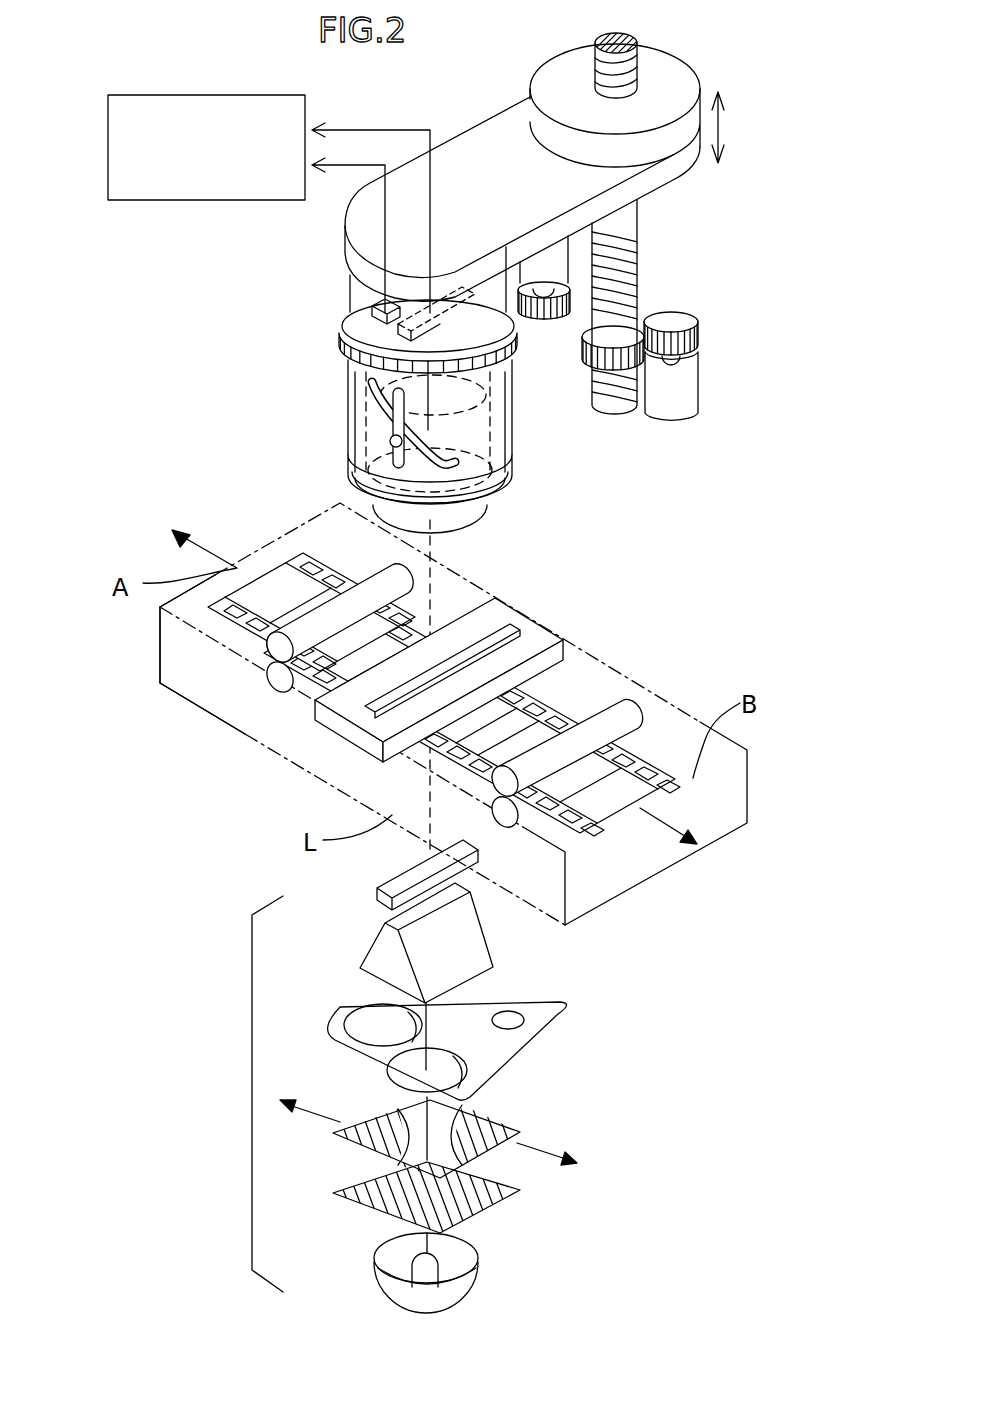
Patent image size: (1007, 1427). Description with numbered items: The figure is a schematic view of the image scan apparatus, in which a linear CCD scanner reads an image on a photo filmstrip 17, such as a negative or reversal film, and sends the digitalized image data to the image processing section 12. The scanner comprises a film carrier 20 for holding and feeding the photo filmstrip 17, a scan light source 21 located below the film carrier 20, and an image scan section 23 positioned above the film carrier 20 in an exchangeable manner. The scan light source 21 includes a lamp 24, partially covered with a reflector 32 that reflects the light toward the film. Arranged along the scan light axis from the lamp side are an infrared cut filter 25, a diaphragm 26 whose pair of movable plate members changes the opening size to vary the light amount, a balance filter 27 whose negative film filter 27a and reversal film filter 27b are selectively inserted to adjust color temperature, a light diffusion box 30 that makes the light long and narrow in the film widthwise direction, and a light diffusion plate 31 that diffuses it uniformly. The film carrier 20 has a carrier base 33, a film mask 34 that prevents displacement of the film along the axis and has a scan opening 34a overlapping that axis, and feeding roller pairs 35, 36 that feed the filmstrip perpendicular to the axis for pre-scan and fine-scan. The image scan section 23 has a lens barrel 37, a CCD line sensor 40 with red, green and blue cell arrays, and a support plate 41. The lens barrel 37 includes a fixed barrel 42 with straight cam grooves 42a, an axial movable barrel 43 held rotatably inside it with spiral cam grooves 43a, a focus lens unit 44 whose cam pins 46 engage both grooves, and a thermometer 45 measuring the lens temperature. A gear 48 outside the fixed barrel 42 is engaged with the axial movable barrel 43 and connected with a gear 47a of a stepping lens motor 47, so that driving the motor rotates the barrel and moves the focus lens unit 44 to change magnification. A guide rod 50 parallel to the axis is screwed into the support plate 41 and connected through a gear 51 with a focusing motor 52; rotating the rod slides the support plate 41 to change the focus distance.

The image processing section 12 is at (148, 108).
The photo filmstrip 17 is at (258, 590).
The film carrier 20 is at (666, 888).
The scan light source 21 is at (252, 1093).
The image scan section 23 is at (695, 225).
The lamp 24 is at (432, 1262).
The infrared cut filter 25 is at (355, 1188).
The diaphragm 26 is at (503, 1108).
The balance filter 27 is at (461, 1037).
The negative film filter 27a is at (412, 1070).
The reversal film filter 27b is at (378, 1023).
The light diffusion box 30 is at (477, 962).
The light diffusion plate 31 is at (376, 895).
The reflector 32 is at (466, 1267).
The carrier base 33 is at (182, 678).
The film mask 34 is at (426, 703).
The scan opening 34a is at (490, 630).
The feeding roller pair 35 is at (622, 713).
The feeding roller pair 36 is at (282, 682).
The lens barrel 37 is at (530, 464).
The CCD line sensor 40 is at (450, 295).
The support plate 41 is at (680, 70).
The fixed barrel 42 is at (348, 386).
The straight cam grooves 42a is at (398, 460).
The axial movable barrel 43 is at (510, 400).
The spiral cam grooves 43a is at (508, 490).
The focus lens unit 44 is at (478, 520).
The thermometer 45 is at (385, 312).
The cam pins 46 is at (393, 442).
The lens motor 47 is at (550, 270).
The gear 47a is at (548, 320).
The gear 48 is at (352, 340).
The guide rod 50 is at (628, 270).
The gear 51 is at (696, 342).
The focusing motor 52 is at (690, 400).